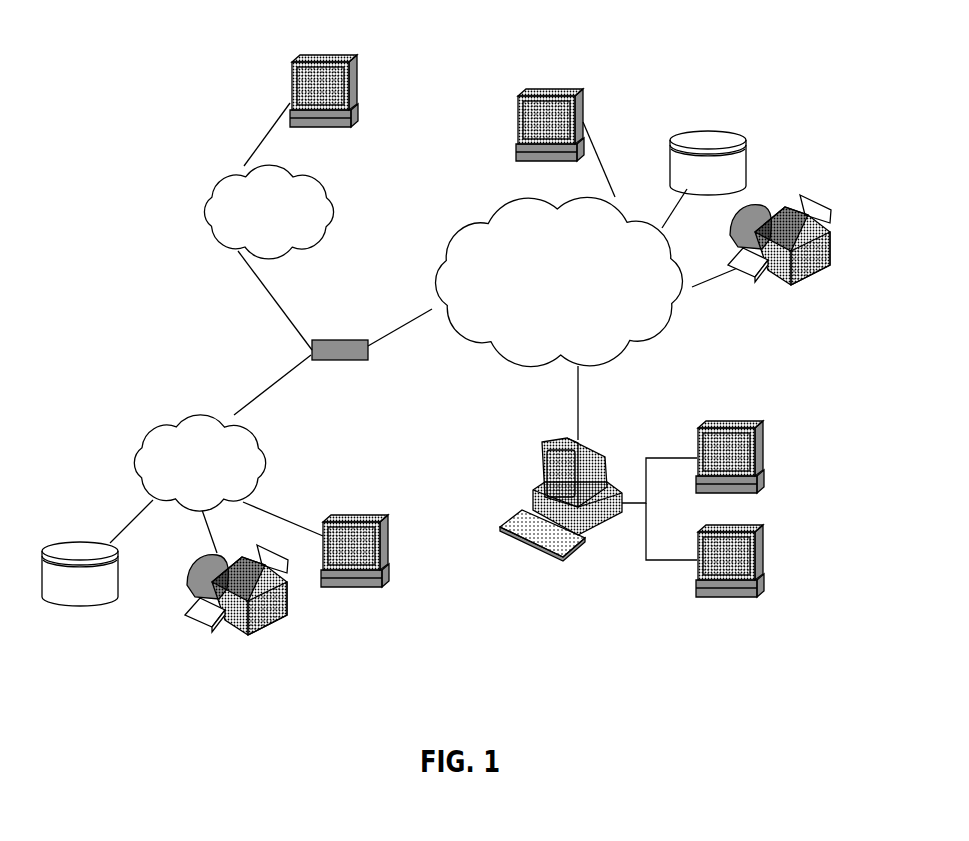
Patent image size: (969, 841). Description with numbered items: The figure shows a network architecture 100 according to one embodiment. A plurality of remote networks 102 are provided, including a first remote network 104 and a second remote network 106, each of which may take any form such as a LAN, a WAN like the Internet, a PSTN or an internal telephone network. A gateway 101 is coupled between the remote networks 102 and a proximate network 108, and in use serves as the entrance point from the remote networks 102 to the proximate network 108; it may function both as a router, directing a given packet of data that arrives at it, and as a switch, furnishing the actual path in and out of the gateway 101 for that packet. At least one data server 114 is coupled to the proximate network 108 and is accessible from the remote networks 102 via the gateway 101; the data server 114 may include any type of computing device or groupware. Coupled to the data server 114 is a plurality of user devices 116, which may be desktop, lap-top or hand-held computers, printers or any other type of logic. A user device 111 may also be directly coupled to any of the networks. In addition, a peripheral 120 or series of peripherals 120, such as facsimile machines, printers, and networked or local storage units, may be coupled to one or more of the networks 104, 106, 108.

The network architecture 100 is at (238, 35).
The remote networks 102 is at (180, 237).
The gateway 101 is at (346, 340).
The first remote network 104 is at (128, 440).
The second remote network 106 is at (333, 184).
The proximate network 108 is at (658, 341).
The user device 111 is at (584, 100).
The data server 114 is at (597, 530).
The user devices 116 is at (357, 86).
The peripheral 120 is at (746, 140).